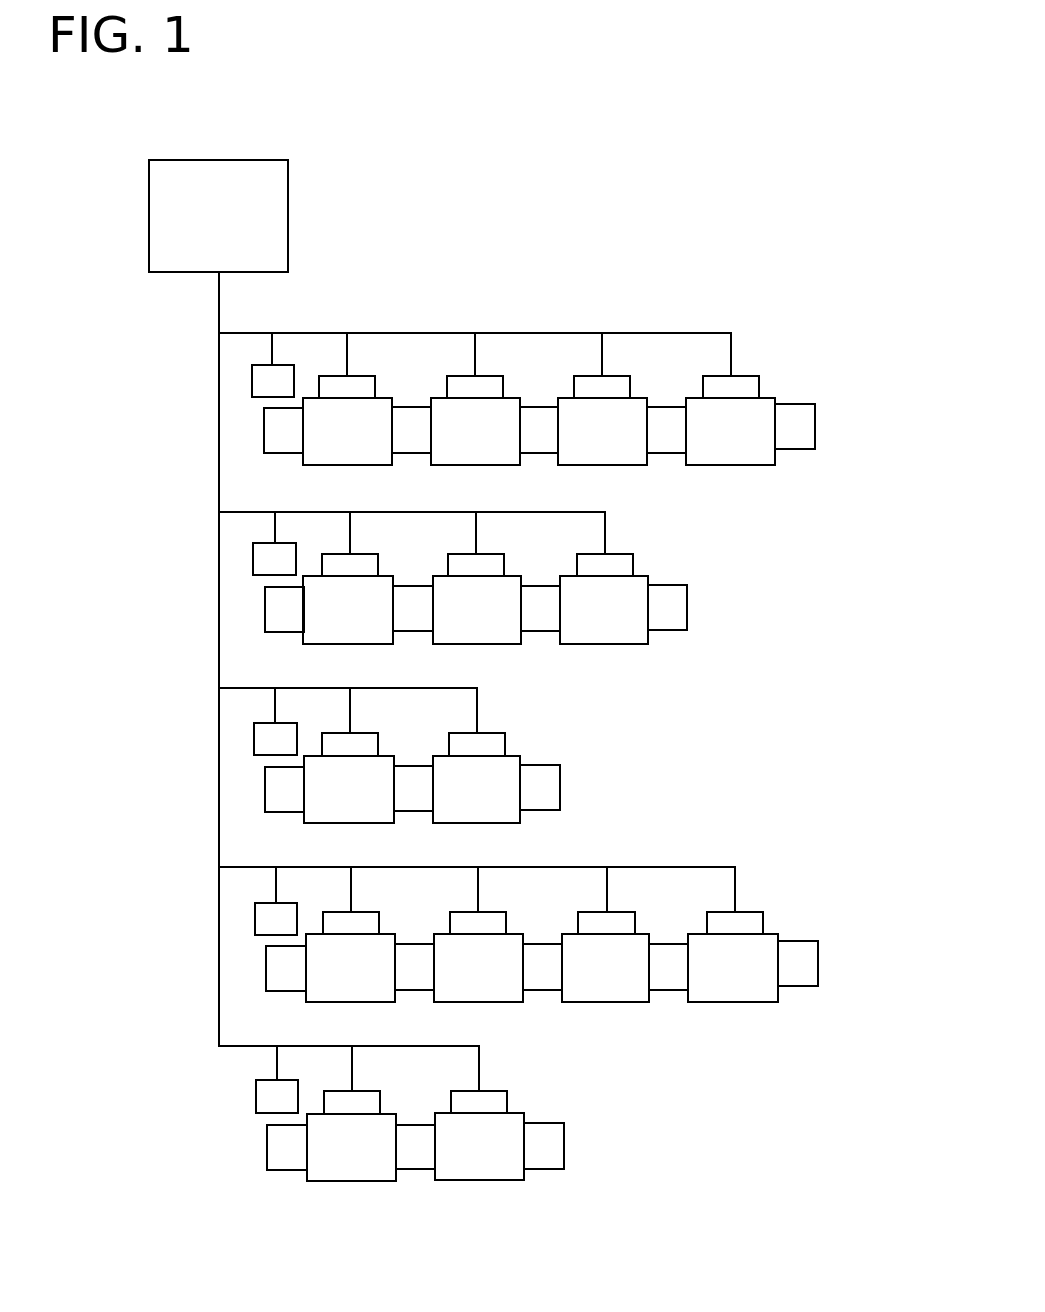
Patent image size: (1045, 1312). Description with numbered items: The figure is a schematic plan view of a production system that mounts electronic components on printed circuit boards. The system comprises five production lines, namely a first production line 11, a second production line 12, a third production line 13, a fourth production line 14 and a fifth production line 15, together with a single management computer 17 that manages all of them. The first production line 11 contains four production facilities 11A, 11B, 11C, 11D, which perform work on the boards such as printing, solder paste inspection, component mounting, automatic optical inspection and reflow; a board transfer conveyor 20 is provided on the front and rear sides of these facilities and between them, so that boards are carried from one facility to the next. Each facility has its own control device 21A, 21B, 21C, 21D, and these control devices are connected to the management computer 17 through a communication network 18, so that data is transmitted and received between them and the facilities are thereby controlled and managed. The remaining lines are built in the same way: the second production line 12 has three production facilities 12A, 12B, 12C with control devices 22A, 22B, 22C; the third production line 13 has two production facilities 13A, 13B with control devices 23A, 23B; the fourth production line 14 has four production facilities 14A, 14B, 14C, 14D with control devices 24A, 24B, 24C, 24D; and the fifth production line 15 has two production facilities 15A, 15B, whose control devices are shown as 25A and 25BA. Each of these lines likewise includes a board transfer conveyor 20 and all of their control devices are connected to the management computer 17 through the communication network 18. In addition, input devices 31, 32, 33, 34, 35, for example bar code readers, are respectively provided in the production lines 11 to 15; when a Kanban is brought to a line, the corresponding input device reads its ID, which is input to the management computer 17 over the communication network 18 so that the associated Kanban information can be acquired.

The management computer 17 is at (288, 218).
The communication network 18 is at (219, 456).
The first production line 11 is at (514, 418).
The second production line 12 is at (453, 597).
The third production line 13 is at (390, 774).
The fourth production line 14 is at (522, 953).
The fifth production line 15 is at (396, 1134).
The board transfer conveyor 20 is at (542, 453).
The input device 31 is at (258, 382).
The input device 32 is at (260, 560).
The input device 33 is at (260, 740).
The input device 34 is at (262, 920).
The input device 35 is at (263, 1097).
The production facility 11A is at (353, 465).
The production facility 11B is at (481, 465).
The production facility 11C is at (608, 465).
The production facility 11D is at (736, 465).
The production facility 12A is at (353, 644).
The production facility 12B is at (483, 644).
The production facility 12C is at (610, 644).
The production facility 13A is at (354, 823).
The production facility 13B is at (483, 823).
The production facility 14A is at (356, 1002).
The production facility 14B is at (484, 1002).
The production facility 14C is at (612, 1002).
The production facility 14D is at (738, 1002).
The production facility 15A is at (357, 1181).
The production facility 15B is at (485, 1180).
The control device 21A is at (360, 381).
The control device 21B is at (488, 381).
The control device 21C is at (615, 381).
The control device 21D is at (744, 381).
The control device 22A is at (363, 559).
The control device 22B is at (489, 559).
The control device 22C is at (618, 559).
The control device 23A is at (363, 738).
The control device 23B is at (490, 738).
The control device 24A is at (364, 917).
The control device 24B is at (491, 917).
The control device 24C is at (620, 917).
The control device 24D is at (748, 917).
The control device 25A is at (365, 1096).
The individual controller 25BA is at (492, 1096).